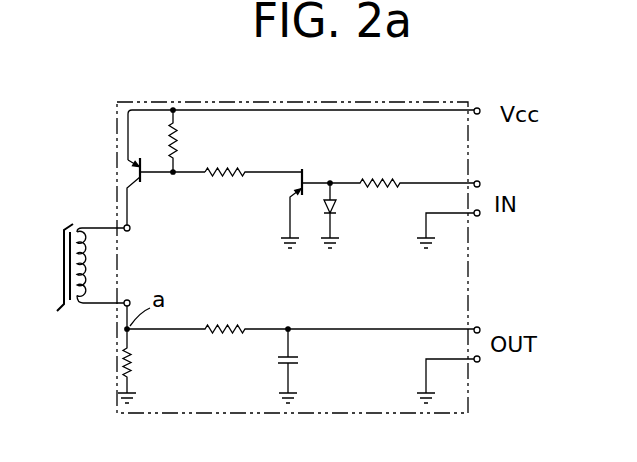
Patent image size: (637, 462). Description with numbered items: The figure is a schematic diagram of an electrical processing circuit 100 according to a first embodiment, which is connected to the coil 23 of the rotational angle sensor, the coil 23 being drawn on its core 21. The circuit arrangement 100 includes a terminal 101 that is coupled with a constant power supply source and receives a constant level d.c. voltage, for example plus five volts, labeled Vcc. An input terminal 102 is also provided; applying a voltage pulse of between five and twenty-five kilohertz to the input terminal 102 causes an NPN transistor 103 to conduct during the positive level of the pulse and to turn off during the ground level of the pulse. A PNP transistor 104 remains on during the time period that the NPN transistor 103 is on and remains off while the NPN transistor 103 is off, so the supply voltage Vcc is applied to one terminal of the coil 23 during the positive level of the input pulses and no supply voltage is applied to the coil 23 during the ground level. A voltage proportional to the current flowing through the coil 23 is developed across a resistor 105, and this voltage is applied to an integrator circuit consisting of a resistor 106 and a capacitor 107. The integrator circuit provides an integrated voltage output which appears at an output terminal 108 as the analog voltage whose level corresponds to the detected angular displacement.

The electrical processing circuit 100 is at (136, 101).
The terminal 101 is at (480, 108).
The input terminal 102 is at (480, 181).
The NPN transistor 103 is at (306, 167).
The PNP transistor 104 is at (146, 182).
The resistor 105 is at (131, 365).
The resistor 106 is at (219, 326).
The capacitor 107 is at (299, 357).
The output terminal 108 is at (481, 327).
The transformer core 21 is at (63, 231).
The coil 23 is at (85, 231).